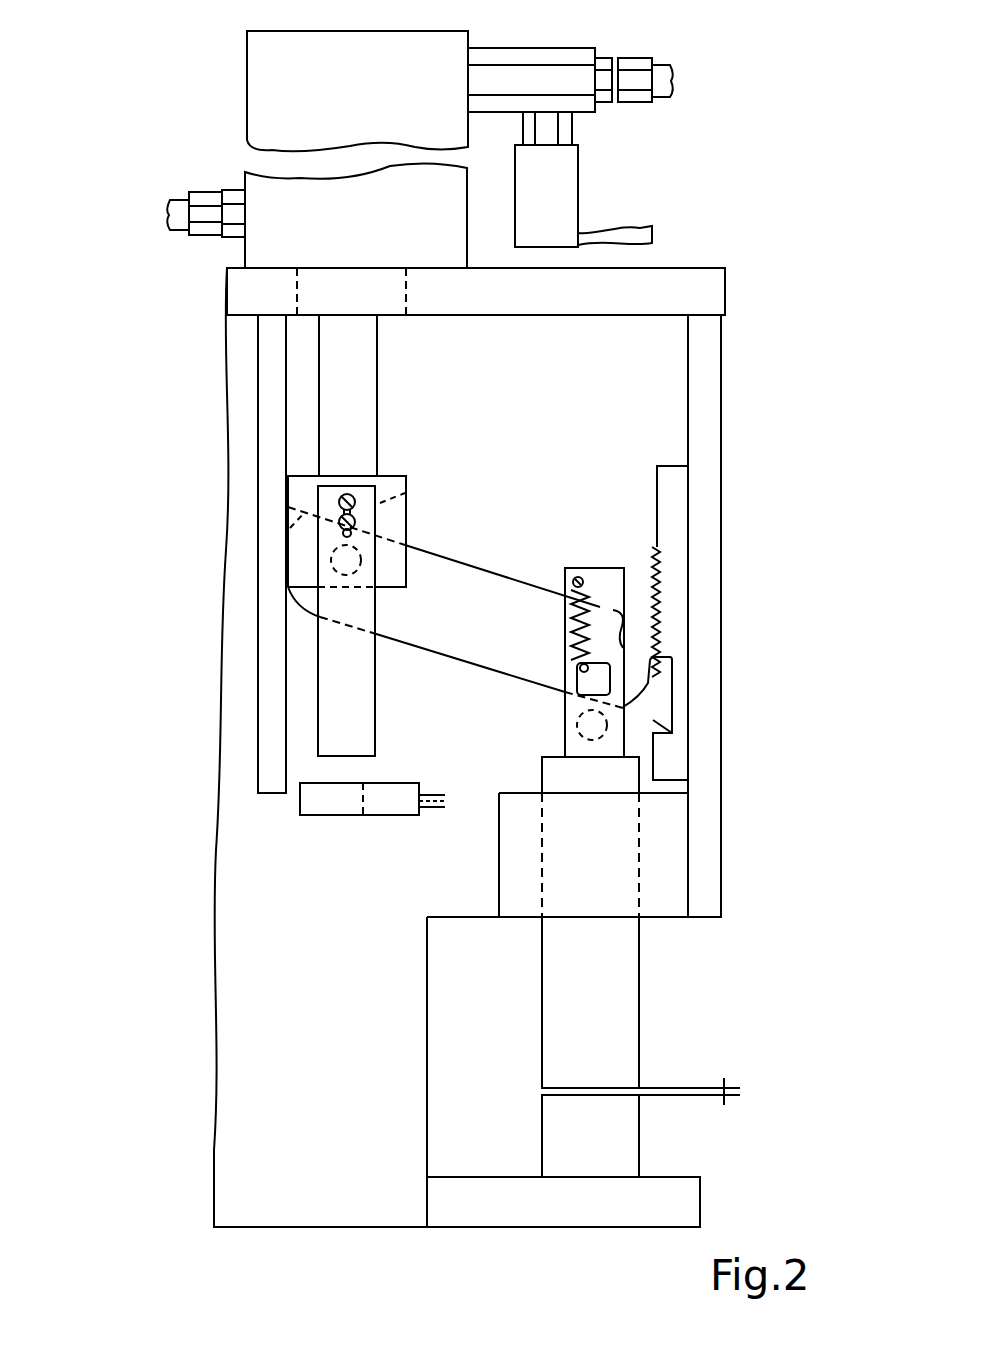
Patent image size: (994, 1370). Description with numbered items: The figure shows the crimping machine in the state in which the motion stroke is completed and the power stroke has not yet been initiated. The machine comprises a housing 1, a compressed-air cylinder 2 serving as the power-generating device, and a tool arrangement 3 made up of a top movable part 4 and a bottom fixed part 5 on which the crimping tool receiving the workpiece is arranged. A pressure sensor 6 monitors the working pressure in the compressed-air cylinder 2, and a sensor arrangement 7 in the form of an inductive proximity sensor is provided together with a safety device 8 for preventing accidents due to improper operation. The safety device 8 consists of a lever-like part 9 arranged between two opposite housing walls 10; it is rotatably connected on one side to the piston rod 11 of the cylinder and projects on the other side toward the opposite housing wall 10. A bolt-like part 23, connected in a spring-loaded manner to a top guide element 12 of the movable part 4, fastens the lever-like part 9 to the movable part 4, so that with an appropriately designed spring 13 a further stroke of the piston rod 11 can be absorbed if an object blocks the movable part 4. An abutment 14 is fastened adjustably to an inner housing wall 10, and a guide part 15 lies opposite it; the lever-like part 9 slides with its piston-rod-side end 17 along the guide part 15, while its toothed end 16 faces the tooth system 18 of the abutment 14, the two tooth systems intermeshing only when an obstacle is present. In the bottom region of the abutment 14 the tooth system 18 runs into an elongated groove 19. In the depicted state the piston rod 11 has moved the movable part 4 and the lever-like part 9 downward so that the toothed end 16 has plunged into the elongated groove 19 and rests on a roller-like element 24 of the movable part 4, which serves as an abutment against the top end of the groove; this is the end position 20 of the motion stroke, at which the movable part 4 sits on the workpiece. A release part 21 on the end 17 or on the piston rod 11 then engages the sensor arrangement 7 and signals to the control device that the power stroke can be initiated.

The housing 1 is at (737, 334).
The compressed-air cylinder 2 is at (352, 58).
The tool arrangement 3 is at (667, 963).
The movable part 4 is at (608, 1043).
The fixed part 5 is at (602, 1157).
The pressure sensor 6 is at (545, 168).
The sensor arrangement 7 is at (390, 795).
The safety device 8 is at (697, 682).
The lever-like part 9 is at (460, 607).
The housing wall 10 is at (247, 537).
The piston rod 11 is at (357, 348).
The top guide element 12 is at (607, 583).
The spring 13 is at (600, 607).
The abutment 14 is at (668, 480).
The guide part 15 is at (282, 425).
The toothed end 16 is at (643, 667).
The end 17 is at (310, 595).
The tooth system 18 is at (657, 628).
The elongated groove 19 is at (585, 667).
The end position 20 is at (733, 1088).
The release part 21 is at (345, 683).
The bolt-like part 23 is at (623, 708).
The roller-like element 24 is at (592, 725).